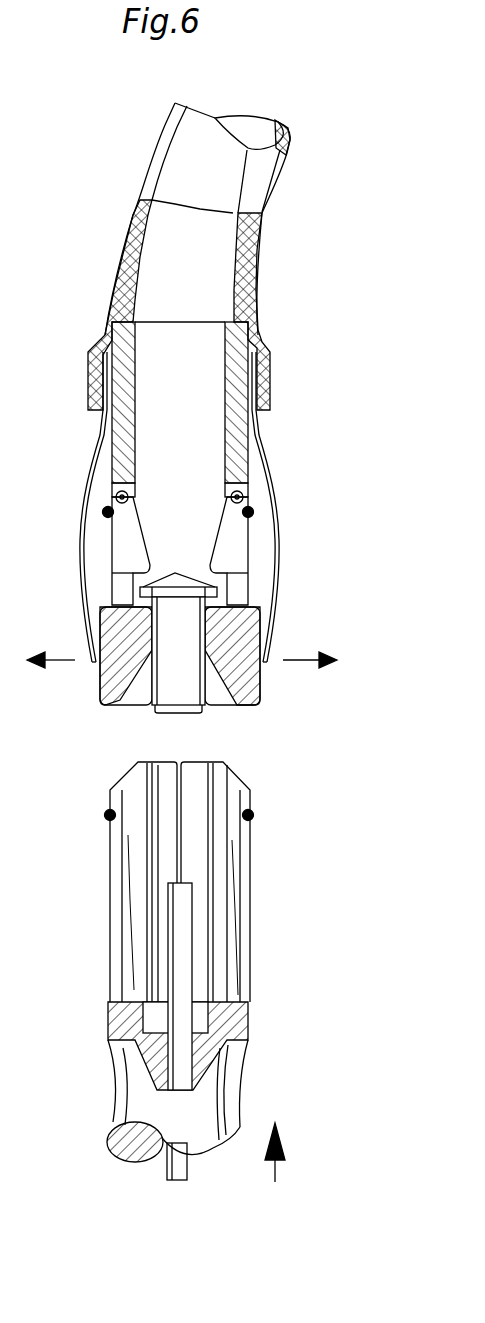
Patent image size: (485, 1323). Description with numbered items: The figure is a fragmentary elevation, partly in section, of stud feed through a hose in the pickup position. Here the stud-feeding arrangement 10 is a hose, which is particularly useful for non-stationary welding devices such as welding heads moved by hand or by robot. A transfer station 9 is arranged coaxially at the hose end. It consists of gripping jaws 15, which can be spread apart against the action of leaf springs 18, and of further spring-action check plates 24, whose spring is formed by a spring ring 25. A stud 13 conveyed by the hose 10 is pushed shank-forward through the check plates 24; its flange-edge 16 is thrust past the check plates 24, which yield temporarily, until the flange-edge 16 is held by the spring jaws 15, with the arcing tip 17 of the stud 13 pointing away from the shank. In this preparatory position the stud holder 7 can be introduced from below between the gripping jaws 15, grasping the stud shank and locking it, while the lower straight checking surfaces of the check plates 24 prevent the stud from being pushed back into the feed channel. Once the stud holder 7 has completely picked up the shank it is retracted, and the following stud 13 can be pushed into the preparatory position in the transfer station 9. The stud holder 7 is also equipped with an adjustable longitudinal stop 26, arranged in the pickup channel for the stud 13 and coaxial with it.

The stud holder 7 is at (238, 938).
The transfer station 9 is at (266, 428).
The stud-feeding arrangement (hose) 10 is at (251, 184).
The stud 13 is at (183, 699).
The gripping jaws 15 is at (110, 678).
The flange-edge 16 is at (140, 592).
The arcing tip 17 is at (177, 570).
The leaf springs 18 is at (102, 487).
The check plates 24 is at (118, 554).
The spring ring 25 is at (252, 509).
The adjustable longitudinal stop 26 is at (193, 913).